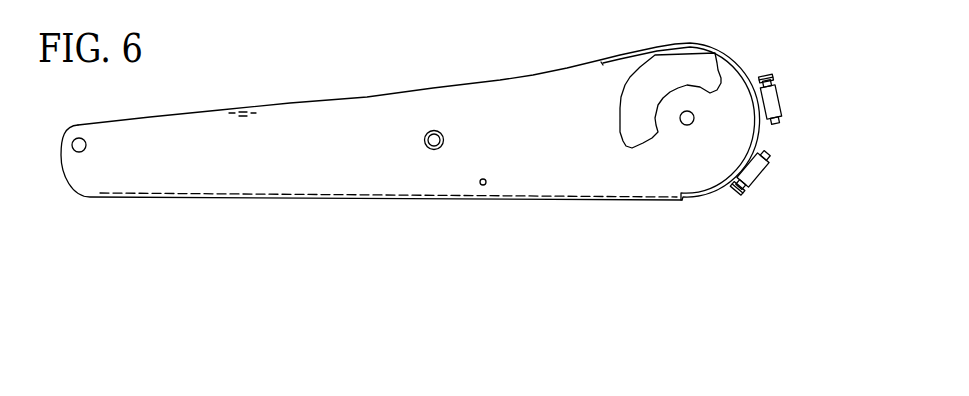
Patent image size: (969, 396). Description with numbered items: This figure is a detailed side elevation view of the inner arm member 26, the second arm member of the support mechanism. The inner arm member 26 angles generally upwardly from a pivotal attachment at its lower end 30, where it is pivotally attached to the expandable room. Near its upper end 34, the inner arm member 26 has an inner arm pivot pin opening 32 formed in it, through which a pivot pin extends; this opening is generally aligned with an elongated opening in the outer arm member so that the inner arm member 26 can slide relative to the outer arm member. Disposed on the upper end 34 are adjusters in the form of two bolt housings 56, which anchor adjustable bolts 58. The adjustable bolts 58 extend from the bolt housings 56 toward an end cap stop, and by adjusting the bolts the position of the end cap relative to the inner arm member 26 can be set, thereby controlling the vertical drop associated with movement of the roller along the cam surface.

The inner arm member 26 is at (449, 152).
The lower end 30 is at (133, 168).
The inner arm pivot pin opening 32 is at (678, 127).
The upper end 34 is at (585, 88).
The bolt housings 56 is at (767, 170).
The adjustable bolts 58 is at (775, 79).